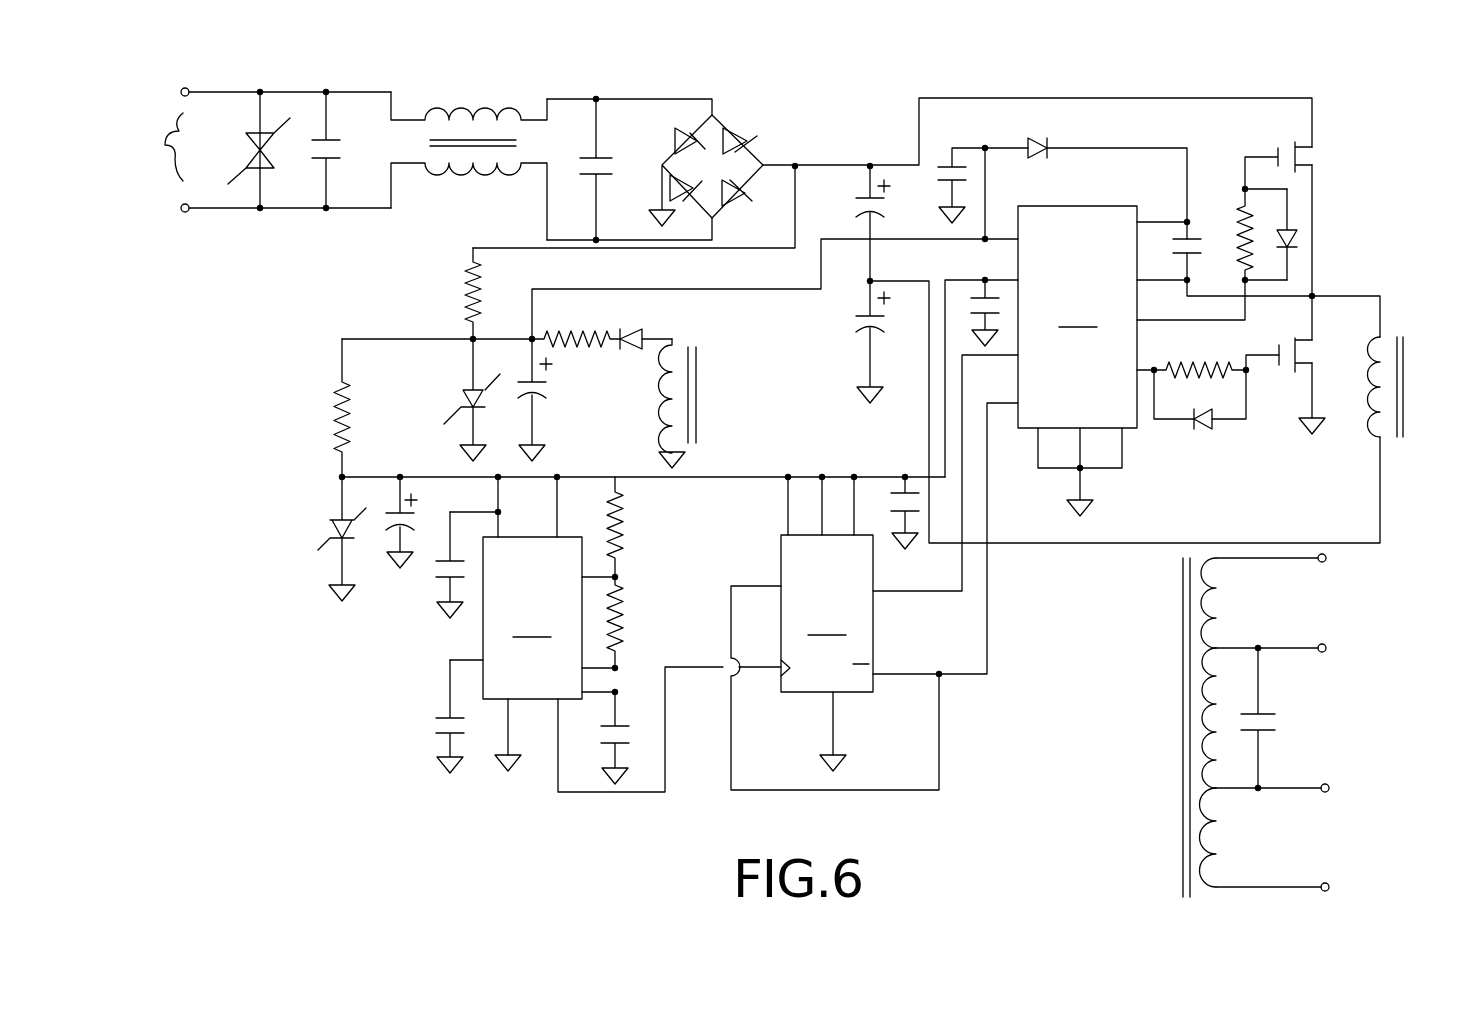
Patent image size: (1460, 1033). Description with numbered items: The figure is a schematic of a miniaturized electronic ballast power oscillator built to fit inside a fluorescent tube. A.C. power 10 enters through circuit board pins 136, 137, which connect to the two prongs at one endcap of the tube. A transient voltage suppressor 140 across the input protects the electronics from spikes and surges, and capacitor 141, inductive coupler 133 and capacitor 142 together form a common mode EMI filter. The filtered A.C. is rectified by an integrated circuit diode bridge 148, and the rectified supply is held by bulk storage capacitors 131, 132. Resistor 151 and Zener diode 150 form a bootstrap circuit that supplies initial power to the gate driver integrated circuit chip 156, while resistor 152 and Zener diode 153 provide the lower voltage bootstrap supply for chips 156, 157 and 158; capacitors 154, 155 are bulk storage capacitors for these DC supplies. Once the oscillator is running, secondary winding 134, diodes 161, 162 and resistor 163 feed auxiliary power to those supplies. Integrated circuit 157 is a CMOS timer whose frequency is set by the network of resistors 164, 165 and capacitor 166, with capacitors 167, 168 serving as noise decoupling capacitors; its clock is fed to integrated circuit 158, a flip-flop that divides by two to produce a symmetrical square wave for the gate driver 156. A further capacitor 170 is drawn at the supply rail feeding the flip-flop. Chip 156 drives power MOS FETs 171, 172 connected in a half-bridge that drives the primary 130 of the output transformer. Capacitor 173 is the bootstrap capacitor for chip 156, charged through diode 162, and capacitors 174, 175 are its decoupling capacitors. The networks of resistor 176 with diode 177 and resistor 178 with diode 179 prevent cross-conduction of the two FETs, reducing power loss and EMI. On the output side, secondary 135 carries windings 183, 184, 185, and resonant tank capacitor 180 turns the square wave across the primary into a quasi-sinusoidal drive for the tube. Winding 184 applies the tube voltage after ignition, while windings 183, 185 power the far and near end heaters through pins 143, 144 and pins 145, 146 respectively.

The A.C. power 10 is at (161, 147).
The circuit board pin 136 is at (180, 91).
The circuit board pin 137 is at (182, 213).
The transient voltage suppressor 140 is at (266, 170).
The capacitor 141 is at (330, 160).
The inductive coupler 133 is at (488, 170).
The capacitor 142 is at (602, 154).
The diode bridge 148 is at (745, 113).
The bulk storage capacitor 131 is at (858, 198).
The bulk storage capacitor 132 is at (854, 316).
The decoupling capacitor 174 is at (938, 164).
The diode 162 is at (1032, 144).
The decoupling capacitor 175 is at (968, 296).
The integrated circuit chip 156 is at (1070, 356).
The bootstrap capacitor 173 is at (1198, 233).
The resistor 176 is at (1254, 212).
The diode 177 is at (1292, 251).
The power MOS FET 171 is at (1270, 126).
The power MOS FET 172 is at (1282, 382).
The resistor 178 is at (1166, 352).
The diode 179 is at (1204, 432).
The primary 130 is at (1406, 430).
The resistor 151 is at (464, 301).
The resistor 152 is at (334, 420).
The Zener diode 150 is at (462, 410).
The bulk storage capacitor 154 is at (548, 382).
The resistor 163 is at (550, 332).
The diode 161 is at (642, 338).
The secondary winding 134 is at (698, 405).
The Zener diode 153 is at (302, 565).
The bulk storage capacitor 155 is at (420, 504).
The noise decoupling capacitor 167 is at (436, 584).
The noise decoupling capacitor 168 is at (444, 718).
The integrated circuit 157 is at (542, 639).
The resistor 164 is at (628, 544).
The resistor 165 is at (628, 609).
The capacitor 166 is at (592, 740).
The integrated circuit 158 is at (828, 639).
The capacitor 170 is at (906, 496).
The secondary 135 is at (1182, 600).
The winding 183 is at (1214, 594).
The winding 184 is at (1208, 688).
The winding 185 is at (1214, 818).
The resonant tank capacitor 180 is at (1278, 716).
The circuit board pin 143 is at (1326, 560).
The circuit board pin 144 is at (1326, 650).
The pin 145 is at (1329, 788).
The pin 146 is at (1329, 887).